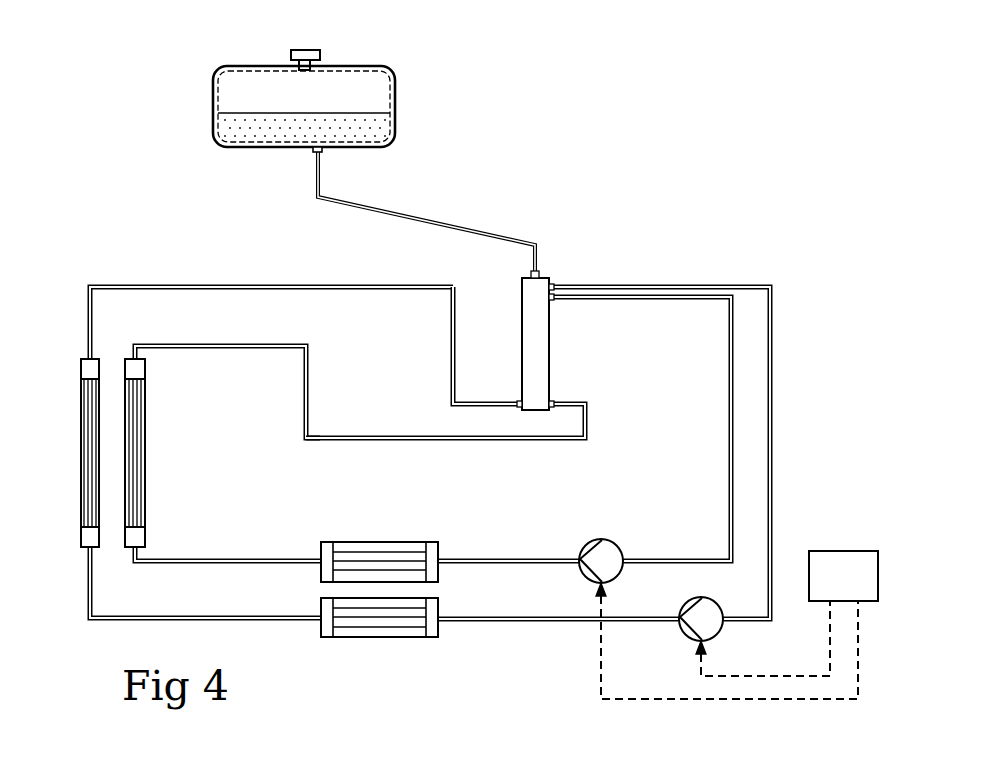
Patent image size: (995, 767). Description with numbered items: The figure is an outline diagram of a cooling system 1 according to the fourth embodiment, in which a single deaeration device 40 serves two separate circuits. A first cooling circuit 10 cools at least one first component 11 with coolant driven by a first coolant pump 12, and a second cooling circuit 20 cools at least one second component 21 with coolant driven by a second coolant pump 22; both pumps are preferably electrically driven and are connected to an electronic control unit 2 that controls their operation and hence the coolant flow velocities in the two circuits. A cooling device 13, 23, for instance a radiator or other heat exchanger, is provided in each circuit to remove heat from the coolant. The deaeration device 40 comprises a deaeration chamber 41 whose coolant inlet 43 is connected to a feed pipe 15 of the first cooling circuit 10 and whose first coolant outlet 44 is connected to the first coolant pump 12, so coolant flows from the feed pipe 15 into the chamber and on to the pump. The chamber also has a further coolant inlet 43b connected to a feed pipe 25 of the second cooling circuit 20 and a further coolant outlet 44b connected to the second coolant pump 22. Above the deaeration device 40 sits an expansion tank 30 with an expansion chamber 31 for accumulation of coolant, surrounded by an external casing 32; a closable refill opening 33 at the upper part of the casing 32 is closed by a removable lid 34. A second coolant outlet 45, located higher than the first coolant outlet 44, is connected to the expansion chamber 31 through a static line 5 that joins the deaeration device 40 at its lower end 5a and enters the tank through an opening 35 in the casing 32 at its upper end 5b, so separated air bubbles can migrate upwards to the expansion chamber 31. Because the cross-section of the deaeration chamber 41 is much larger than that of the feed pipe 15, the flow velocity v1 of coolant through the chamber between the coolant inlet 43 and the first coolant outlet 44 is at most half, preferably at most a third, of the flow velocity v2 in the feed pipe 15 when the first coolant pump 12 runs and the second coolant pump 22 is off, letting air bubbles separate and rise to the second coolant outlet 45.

The cooling system 1 is at (556, 186).
The electronic control unit 2 is at (840, 555).
The static line 5 is at (371, 210).
The lower end of static line 5a is at (528, 267).
The upper end of static line 5b is at (325, 148).
The first cooling circuit 10 is at (172, 269).
The first component 11 is at (366, 642).
The first coolant pump 12 is at (712, 625).
The cooling device 13 is at (84, 402).
The feed pipe 15 is at (450, 389).
The second cooling circuit 20 is at (331, 382).
The second component 21 is at (374, 547).
The second coolant pump 22 is at (607, 541).
The cooling device 23 is at (141, 418).
The feed pipe 25 is at (590, 423).
The expansion tank 30 is at (297, 99).
The expansion chamber 31 is at (372, 93).
The external casing 32 is at (396, 109).
The refill opening 33 is at (300, 67).
The removable lid 34 is at (302, 50).
The opening 35 is at (312, 149).
The deaeration device 40 is at (555, 314).
The deaeration chamber 41 is at (526, 337).
The coolant inlet 43 is at (520, 402).
The further coolant inlet 43b is at (553, 403).
The first coolant outlet 44 is at (553, 287).
The further coolant outlet 44b is at (553, 298).
The second coolant outlet 45 is at (538, 274).
The flow velocity v1 is at (565, 378).
The flow velocity v2 is at (435, 358).